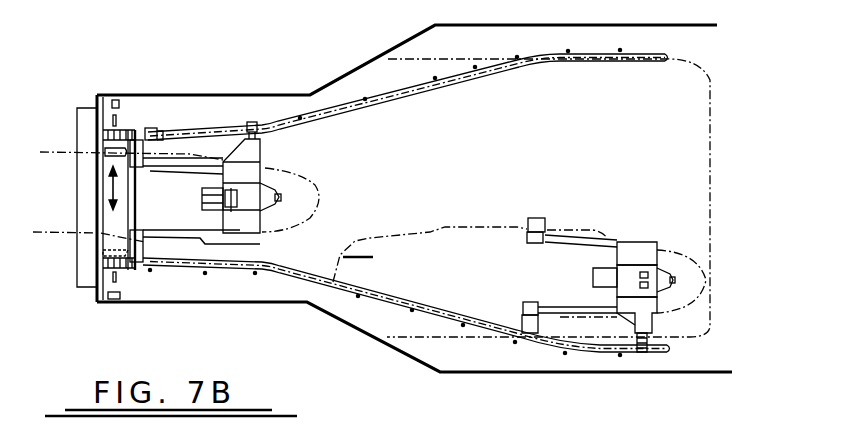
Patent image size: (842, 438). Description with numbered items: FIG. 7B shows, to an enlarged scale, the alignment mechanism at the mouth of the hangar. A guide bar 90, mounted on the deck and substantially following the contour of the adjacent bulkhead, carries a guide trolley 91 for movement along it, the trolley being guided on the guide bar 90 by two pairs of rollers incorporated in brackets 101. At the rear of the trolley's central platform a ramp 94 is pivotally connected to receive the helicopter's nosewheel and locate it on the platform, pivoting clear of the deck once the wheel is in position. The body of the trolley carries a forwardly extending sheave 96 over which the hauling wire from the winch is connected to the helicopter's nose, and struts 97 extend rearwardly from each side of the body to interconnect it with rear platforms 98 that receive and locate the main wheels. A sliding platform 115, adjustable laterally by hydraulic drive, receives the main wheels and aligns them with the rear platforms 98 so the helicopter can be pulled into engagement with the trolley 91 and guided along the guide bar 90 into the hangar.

The guide bar 90 is at (443, 88).
The guide trolley 91 is at (270, 153).
The ramp 94 is at (207, 200).
The sheave 96 is at (281, 198).
The struts 97 is at (170, 228).
The rear platforms 98 is at (140, 140).
The brackets 101 is at (150, 130).
The sliding platform 115 is at (100, 253).